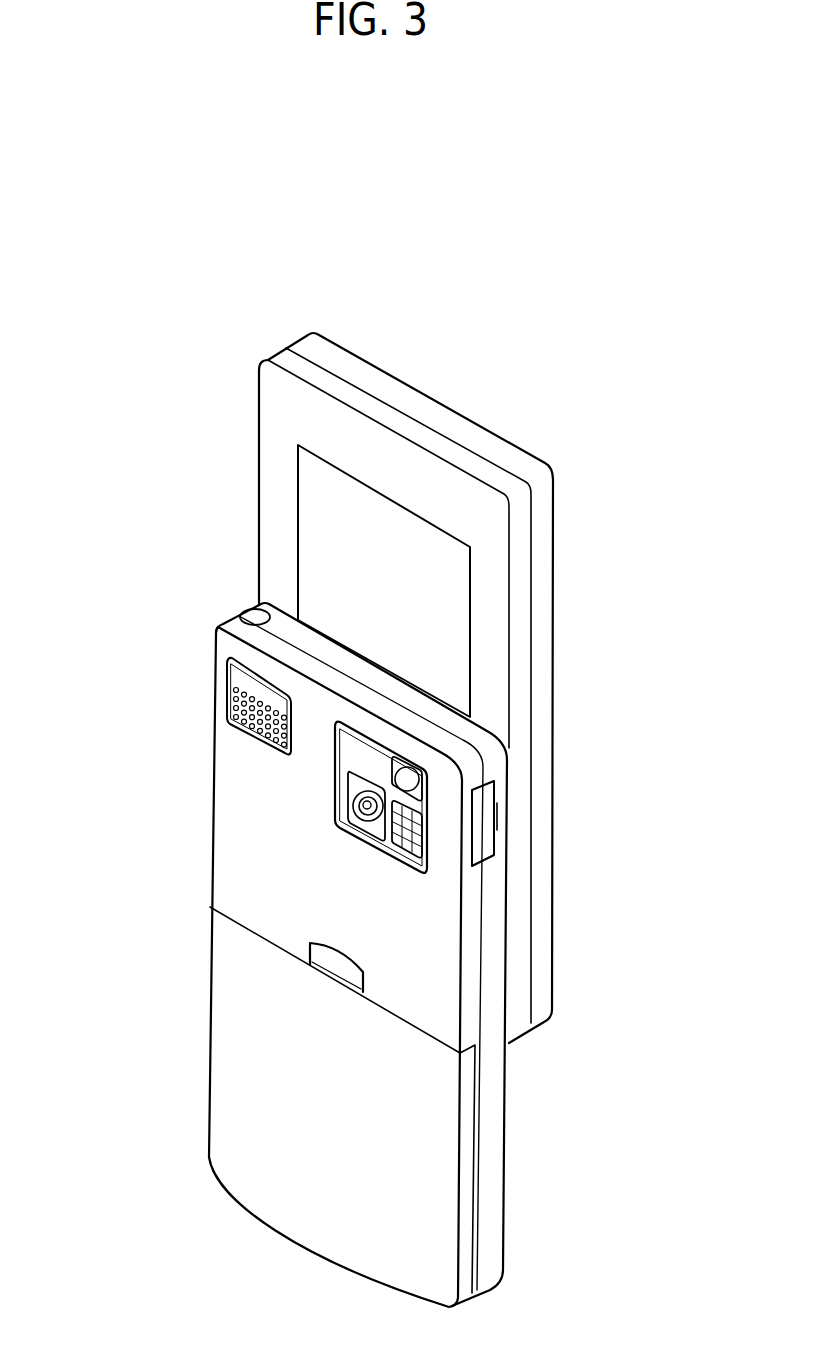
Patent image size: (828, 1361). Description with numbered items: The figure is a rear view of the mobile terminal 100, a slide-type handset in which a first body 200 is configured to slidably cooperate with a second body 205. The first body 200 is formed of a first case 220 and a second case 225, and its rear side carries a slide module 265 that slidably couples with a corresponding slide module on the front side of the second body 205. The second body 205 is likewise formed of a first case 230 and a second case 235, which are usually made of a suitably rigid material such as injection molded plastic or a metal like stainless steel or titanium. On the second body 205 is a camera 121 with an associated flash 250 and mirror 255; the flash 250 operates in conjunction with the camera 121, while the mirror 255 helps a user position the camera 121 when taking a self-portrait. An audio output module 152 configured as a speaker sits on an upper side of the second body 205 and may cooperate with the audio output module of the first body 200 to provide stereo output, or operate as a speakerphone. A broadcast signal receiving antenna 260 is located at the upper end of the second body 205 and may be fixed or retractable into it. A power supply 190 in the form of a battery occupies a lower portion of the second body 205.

The mobile terminal 100 is at (540, 362).
The first body 200 is at (222, 481).
The second body 205 is at (189, 810).
The first case 220 is at (303, 342).
The second case 225 is at (287, 357).
The slide module 265 is at (300, 560).
The broadcast signal receiving antenna 260 is at (247, 611).
The audio output module 152 is at (233, 703).
The flash 250 is at (427, 868).
The camera 121 is at (368, 812).
The mirror 255 is at (407, 780).
The second case 235 is at (470, 1008).
The first case 230 is at (495, 1070).
The power supply 190 is at (227, 1002).